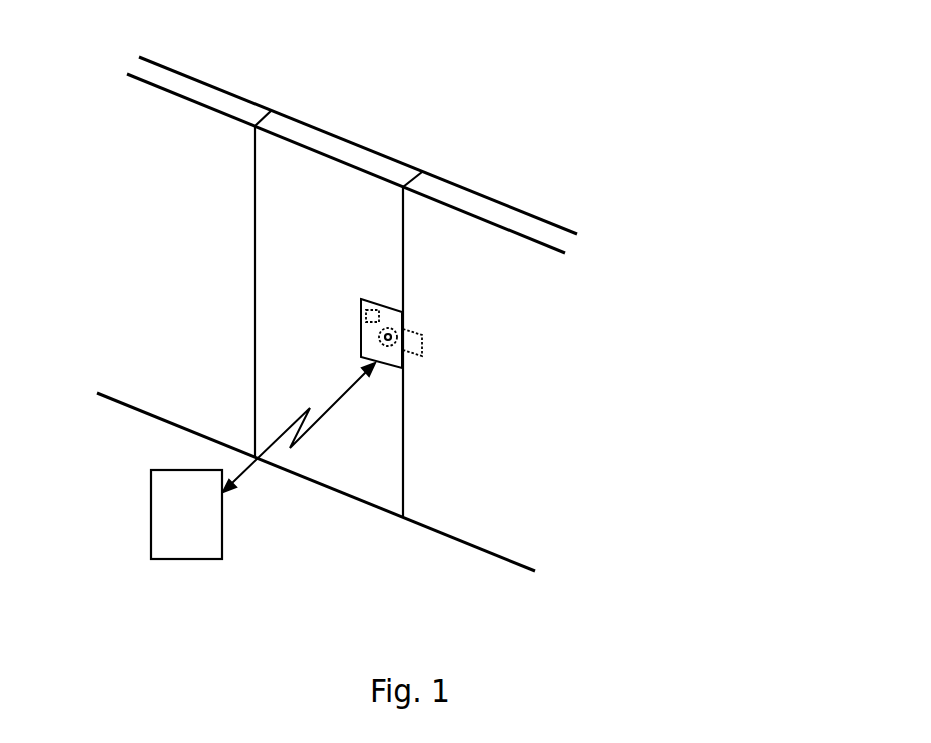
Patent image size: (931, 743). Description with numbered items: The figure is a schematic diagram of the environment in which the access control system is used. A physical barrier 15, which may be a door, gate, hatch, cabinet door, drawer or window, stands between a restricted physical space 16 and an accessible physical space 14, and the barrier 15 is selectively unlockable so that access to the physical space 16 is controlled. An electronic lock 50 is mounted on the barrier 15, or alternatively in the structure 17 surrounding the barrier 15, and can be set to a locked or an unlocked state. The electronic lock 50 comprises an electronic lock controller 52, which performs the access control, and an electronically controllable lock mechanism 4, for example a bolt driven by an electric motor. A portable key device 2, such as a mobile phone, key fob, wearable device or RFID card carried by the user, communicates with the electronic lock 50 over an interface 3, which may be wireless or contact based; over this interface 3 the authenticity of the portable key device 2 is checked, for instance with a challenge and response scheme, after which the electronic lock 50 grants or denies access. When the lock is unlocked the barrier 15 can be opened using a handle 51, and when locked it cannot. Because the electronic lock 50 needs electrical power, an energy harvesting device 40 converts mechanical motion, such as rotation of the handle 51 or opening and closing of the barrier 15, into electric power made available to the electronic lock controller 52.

The portable key device 2 is at (175, 559).
The interface 3 is at (243, 475).
The electronically controllable lock mechanism 4 is at (422, 340).
The accessible physical space 14 is at (100, 211).
The physical barrier 15 is at (306, 168).
The physical space 16 is at (754, 75).
The structure 17 is at (558, 396).
The energy harvesting device 40 is at (389, 342).
The electronic lock 50 is at (370, 298).
The handle 51 is at (383, 337).
The electronic lock controller 52 is at (362, 323).